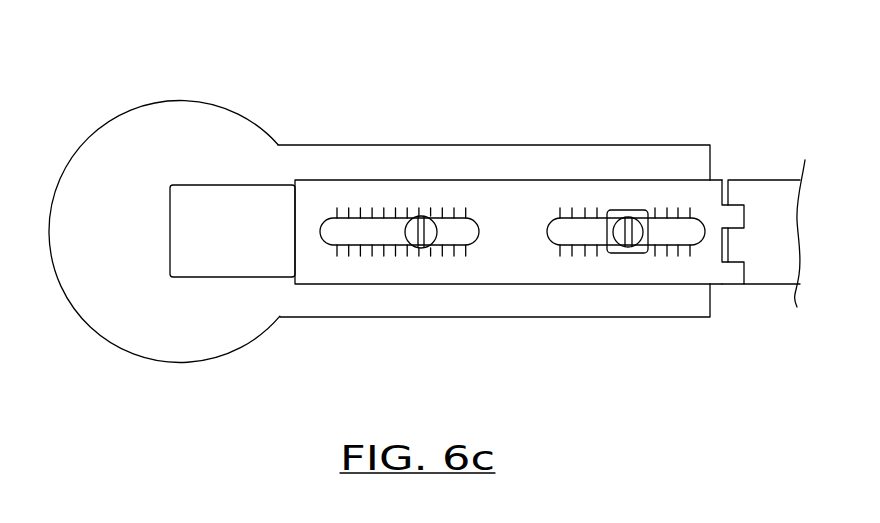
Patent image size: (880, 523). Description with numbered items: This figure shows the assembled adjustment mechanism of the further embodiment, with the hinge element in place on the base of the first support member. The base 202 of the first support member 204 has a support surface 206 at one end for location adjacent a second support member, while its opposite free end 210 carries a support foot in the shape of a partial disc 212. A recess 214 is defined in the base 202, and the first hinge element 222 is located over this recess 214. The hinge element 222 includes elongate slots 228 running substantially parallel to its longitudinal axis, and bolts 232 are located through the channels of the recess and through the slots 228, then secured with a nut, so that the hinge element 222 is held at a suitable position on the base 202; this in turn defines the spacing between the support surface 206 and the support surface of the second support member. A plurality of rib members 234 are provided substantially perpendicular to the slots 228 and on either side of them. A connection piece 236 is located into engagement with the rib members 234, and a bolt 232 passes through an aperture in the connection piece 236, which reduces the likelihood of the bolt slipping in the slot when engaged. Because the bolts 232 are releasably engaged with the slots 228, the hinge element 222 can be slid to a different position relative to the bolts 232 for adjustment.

The base 202 is at (313, 298).
The first support member 204 is at (518, 145).
The support surface 206 is at (710, 162).
The free end 210 is at (247, 193).
The partial disc 212 is at (187, 132).
The recess 214 is at (280, 143).
The first hinge element 222 is at (612, 192).
The elongate slots 228 is at (373, 225).
The bolts 232 is at (430, 246).
The rib members 234 is at (348, 247).
The connection piece 236 is at (650, 253).